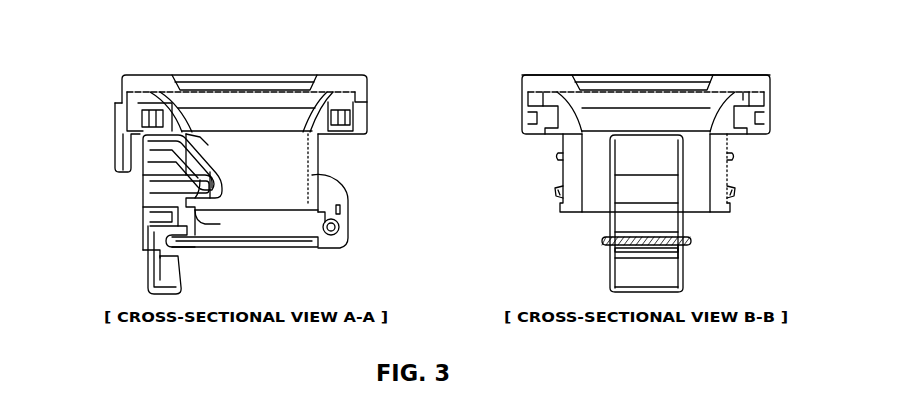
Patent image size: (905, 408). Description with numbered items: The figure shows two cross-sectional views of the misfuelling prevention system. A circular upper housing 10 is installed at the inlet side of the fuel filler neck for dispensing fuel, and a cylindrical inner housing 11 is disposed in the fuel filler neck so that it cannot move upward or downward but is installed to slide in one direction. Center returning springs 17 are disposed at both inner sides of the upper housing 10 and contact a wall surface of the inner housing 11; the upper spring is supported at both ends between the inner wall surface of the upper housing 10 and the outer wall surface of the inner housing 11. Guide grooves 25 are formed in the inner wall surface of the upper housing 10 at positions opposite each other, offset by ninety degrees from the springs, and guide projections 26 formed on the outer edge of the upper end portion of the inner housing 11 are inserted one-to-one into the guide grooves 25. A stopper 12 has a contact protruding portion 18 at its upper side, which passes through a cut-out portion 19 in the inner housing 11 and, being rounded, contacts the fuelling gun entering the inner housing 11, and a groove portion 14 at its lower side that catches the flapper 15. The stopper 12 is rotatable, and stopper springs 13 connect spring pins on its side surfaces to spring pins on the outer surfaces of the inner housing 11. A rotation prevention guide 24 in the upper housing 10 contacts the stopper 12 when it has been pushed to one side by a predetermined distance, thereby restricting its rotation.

The upper housing 10 is at (327, 79).
The inner housing 11 is at (720, 175).
The stopper 12 is at (156, 185).
The stopper spring 13 is at (733, 197).
The groove portion 14 is at (160, 251).
The flapper 15 is at (262, 245).
The center returning spring 17 is at (338, 98).
The contact protruding portion 18 is at (222, 190).
The cut-out portion 19 is at (200, 137).
The rotation prevention guide 24 is at (121, 150).
The guide groove 25 is at (745, 92).
The guide projection 26 is at (740, 92).